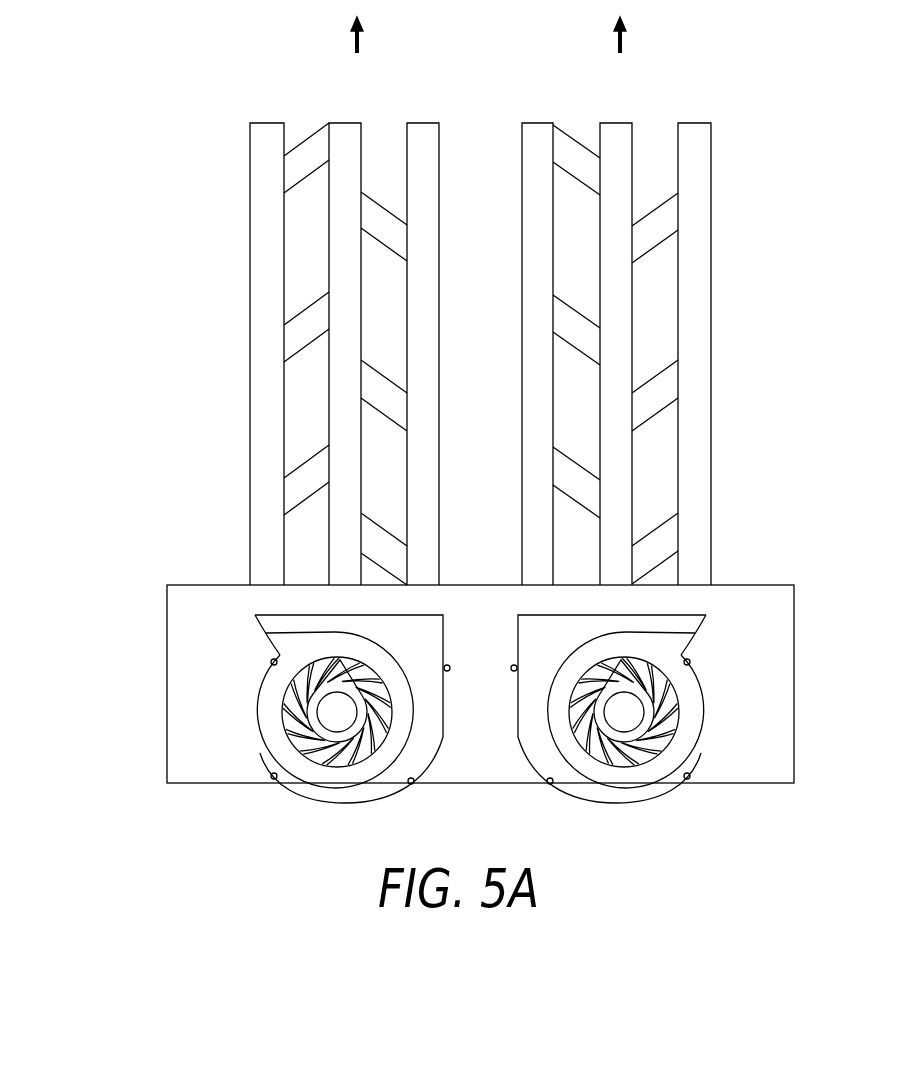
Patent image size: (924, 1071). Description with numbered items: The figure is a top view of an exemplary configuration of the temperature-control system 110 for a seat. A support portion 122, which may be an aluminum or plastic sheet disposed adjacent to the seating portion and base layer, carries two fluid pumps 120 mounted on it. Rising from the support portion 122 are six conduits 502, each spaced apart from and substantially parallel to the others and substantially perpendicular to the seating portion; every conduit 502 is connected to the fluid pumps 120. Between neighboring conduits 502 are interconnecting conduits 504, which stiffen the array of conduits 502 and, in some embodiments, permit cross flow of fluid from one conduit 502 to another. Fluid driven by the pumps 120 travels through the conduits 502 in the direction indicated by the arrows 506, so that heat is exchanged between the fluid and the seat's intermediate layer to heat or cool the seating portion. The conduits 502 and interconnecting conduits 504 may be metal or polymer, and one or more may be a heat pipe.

The temperature-control system 110 is at (828, 128).
The fluid pump 120 is at (341, 775).
The support portion 122 is at (785, 688).
The conduit 502 is at (250, 136).
The interconnecting conduit 504 is at (305, 309).
The arrows 506 is at (362, 40).